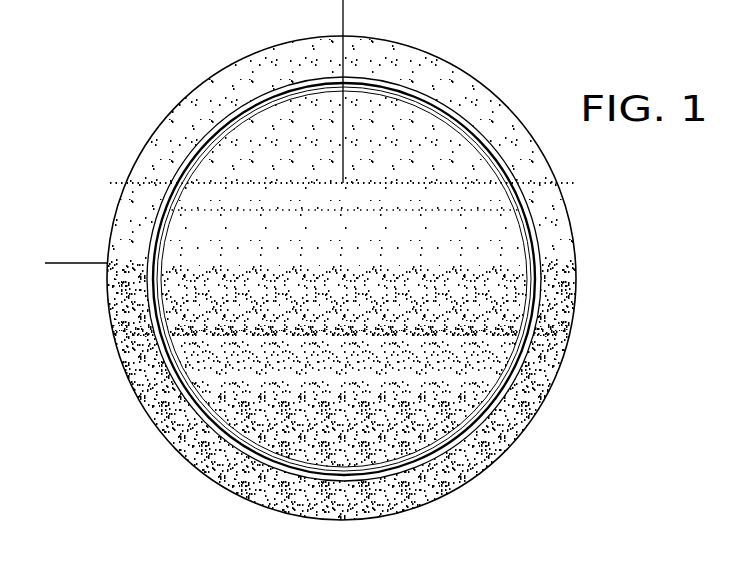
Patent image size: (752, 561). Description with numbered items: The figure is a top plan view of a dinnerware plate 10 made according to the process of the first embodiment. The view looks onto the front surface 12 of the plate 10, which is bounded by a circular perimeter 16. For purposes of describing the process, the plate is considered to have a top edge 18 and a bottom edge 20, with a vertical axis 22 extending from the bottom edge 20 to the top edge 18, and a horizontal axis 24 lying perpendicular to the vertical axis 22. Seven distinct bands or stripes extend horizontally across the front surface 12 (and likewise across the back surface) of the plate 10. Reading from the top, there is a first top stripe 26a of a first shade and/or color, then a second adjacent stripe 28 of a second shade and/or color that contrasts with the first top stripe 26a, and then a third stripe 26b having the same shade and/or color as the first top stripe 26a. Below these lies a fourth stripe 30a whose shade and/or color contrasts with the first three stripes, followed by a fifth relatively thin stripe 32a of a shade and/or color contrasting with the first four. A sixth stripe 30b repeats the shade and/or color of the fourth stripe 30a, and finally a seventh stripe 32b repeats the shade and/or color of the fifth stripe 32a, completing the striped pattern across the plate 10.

The dinnerware plate 10 is at (598, 243).
The front surface 12 is at (382, 313).
The circular perimeter 16 is at (578, 295).
The top edge 18 is at (372, 35).
The bottom edge 20 is at (342, 520).
The vertical axis 22 is at (345, 5).
The horizontal axis 24 is at (78, 263).
The first top stripe 26a is at (545, 162).
The third stripe 26b is at (563, 262).
The second adjacent stripe 28 is at (553, 203).
The fourth stripe 30a is at (562, 322).
The sixth stripe 30b is at (543, 377).
The fifth relatively thin stripe 32a is at (567, 336).
The seventh stripe 32b is at (537, 423).